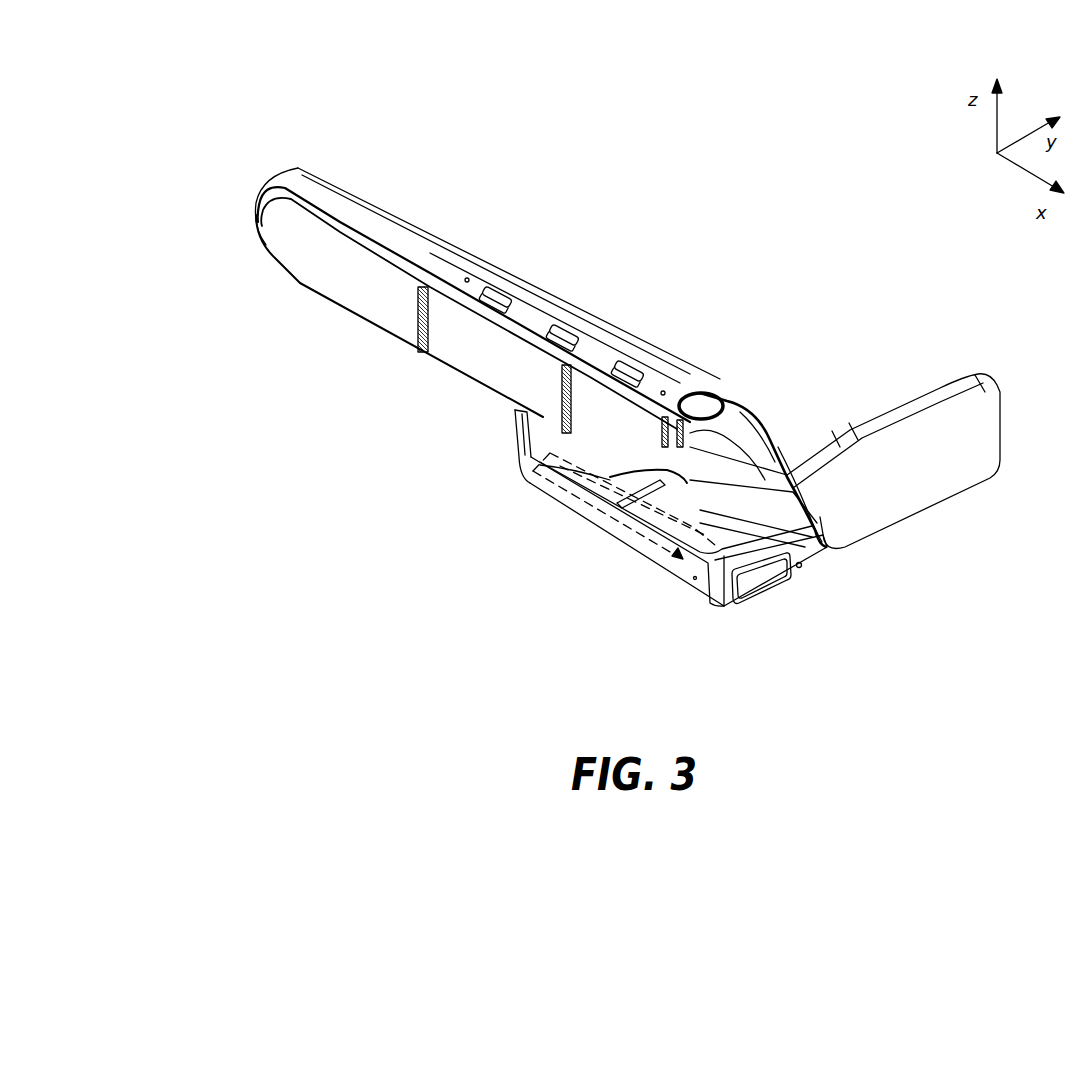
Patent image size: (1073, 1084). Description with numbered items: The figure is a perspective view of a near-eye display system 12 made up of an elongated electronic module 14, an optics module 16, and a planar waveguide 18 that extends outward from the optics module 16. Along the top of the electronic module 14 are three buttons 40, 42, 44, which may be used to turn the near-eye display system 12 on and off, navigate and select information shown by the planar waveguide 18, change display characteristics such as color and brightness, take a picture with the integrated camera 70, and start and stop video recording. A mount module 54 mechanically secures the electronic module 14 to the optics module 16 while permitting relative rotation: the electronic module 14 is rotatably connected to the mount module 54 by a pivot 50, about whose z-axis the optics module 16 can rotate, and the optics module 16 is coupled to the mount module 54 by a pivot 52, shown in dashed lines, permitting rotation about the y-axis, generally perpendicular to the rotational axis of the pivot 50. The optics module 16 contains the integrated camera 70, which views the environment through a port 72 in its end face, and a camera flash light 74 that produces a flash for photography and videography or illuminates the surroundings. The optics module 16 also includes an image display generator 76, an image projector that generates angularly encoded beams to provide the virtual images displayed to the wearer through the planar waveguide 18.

The near-eye display system 12 is at (350, 612).
The electronic module 14 is at (270, 237).
The optics module 16 is at (645, 553).
The planar waveguide 18 is at (923, 484).
The button 40 is at (496, 290).
The button 42 is at (563, 328).
The button 44 is at (630, 366).
The pivot 50 is at (705, 390).
The pivot 52 is at (682, 467).
The mount module 54 is at (740, 424).
The integrated camera 70 is at (766, 572).
The port 72 is at (728, 595).
The camera flash light 74 is at (806, 567).
The image display generator 76 is at (568, 447).